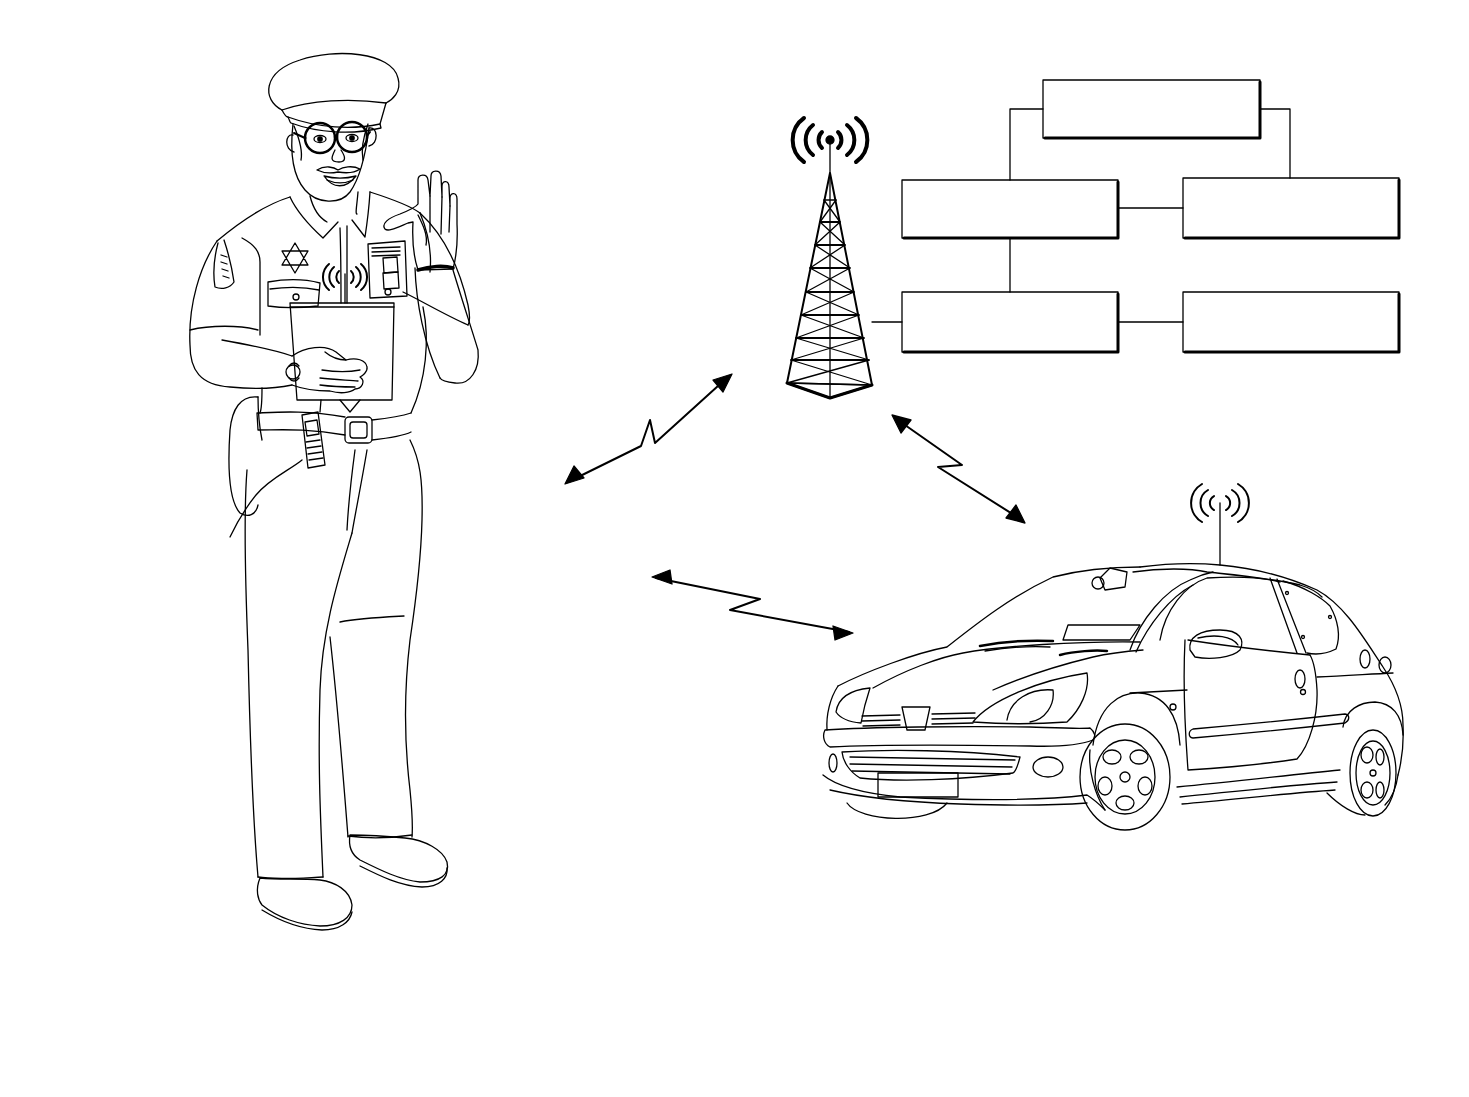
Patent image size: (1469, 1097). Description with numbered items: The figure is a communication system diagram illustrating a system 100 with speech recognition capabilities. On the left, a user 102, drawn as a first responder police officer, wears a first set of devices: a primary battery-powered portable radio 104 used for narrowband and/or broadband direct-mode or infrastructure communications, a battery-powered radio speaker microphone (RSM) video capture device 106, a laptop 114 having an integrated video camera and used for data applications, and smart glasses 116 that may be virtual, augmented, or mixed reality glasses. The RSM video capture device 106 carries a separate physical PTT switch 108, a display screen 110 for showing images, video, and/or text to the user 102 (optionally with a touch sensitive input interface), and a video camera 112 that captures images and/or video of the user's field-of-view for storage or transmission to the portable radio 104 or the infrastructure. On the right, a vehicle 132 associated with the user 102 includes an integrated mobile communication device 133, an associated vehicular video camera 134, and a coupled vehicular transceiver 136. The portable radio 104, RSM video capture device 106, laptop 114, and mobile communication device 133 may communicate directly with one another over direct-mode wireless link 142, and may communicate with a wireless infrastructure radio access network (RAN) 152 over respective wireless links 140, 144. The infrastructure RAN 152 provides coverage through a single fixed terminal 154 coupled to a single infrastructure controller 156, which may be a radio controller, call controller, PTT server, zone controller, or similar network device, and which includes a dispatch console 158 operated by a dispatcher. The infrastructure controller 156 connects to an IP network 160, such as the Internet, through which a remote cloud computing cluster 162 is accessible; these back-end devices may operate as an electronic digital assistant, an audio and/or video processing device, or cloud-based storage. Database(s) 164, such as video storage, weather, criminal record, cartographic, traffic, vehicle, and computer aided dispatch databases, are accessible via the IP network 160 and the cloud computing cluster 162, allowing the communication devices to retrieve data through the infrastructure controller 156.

The system 100 is at (176, 96).
The user 102 is at (403, 196).
The portable radio 104 is at (244, 527).
The radio speaker microphone (RSM) video capture device 106 is at (390, 245).
The PTT switch 108 is at (397, 257).
The display screen 110 is at (397, 270).
The video camera 112 is at (396, 290).
The laptop 114 is at (377, 386).
The smart glasses 116 is at (296, 133).
The vehicle 132 is at (1370, 595).
The mobile communication device 133 is at (1063, 627).
The vehicular video camera 134 is at (1100, 575).
The vehicular transceiver 136 is at (1222, 540).
The wireless link 140 is at (690, 414).
The direct-mode wireless link 142 is at (706, 588).
The wireless link 144 is at (928, 440).
The infrastructure radio access network (RAN) 152 is at (758, 140).
The fixed terminal 154 is at (807, 288).
The infrastructure controller 156 is at (1012, 354).
The dispatch console 158 is at (1400, 326).
The IP network 160 is at (950, 240).
The cloud computing cluster 162 is at (1400, 213).
The database(s) 164 is at (1043, 94).